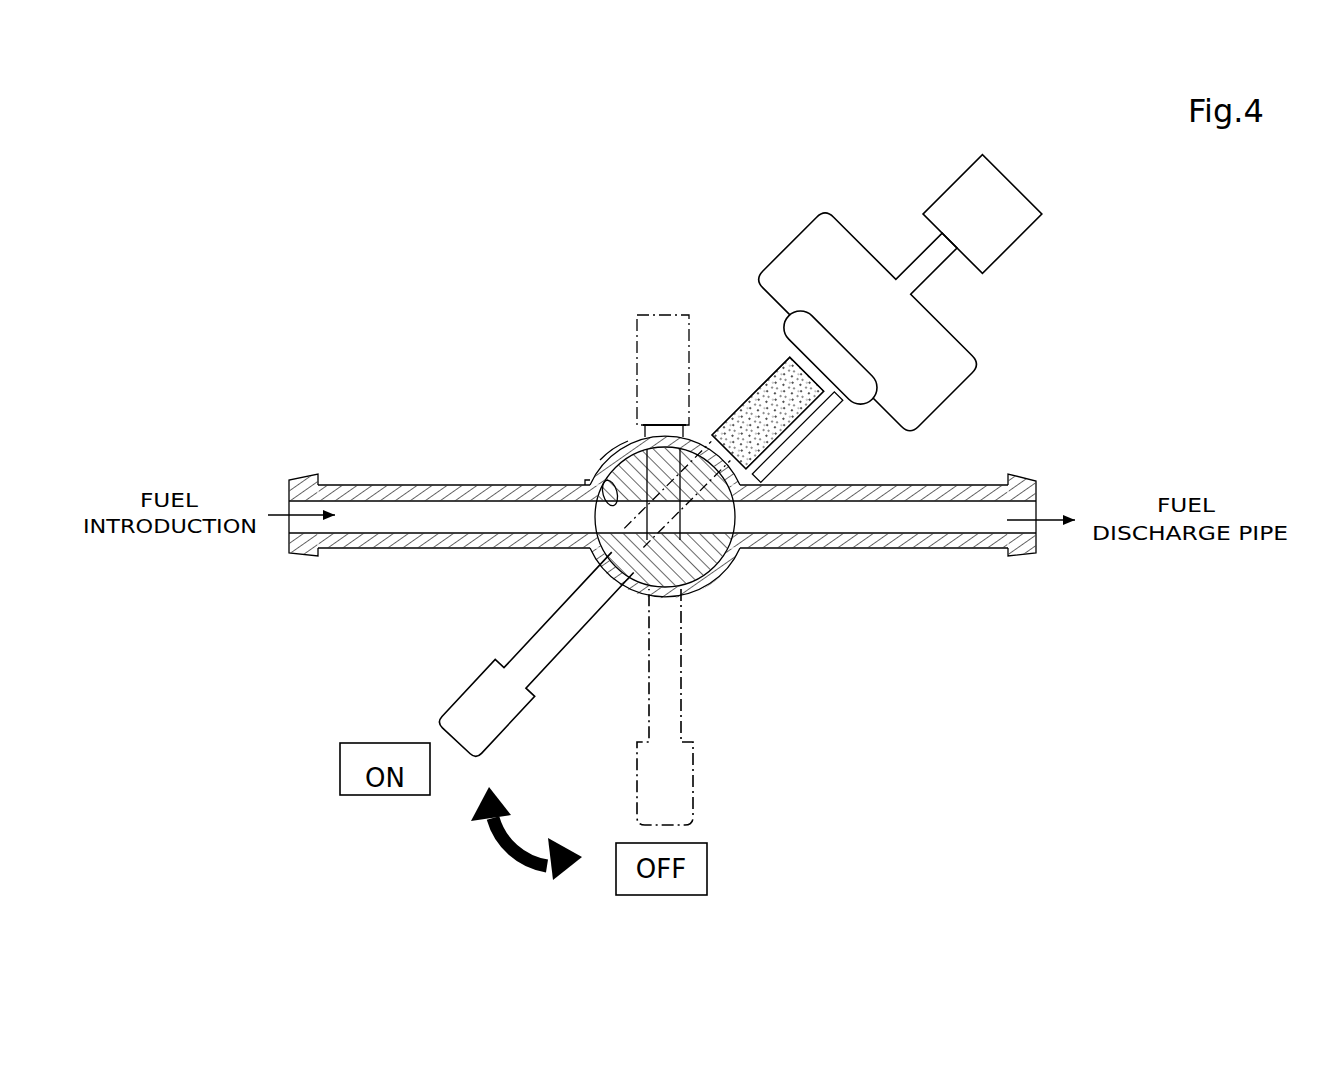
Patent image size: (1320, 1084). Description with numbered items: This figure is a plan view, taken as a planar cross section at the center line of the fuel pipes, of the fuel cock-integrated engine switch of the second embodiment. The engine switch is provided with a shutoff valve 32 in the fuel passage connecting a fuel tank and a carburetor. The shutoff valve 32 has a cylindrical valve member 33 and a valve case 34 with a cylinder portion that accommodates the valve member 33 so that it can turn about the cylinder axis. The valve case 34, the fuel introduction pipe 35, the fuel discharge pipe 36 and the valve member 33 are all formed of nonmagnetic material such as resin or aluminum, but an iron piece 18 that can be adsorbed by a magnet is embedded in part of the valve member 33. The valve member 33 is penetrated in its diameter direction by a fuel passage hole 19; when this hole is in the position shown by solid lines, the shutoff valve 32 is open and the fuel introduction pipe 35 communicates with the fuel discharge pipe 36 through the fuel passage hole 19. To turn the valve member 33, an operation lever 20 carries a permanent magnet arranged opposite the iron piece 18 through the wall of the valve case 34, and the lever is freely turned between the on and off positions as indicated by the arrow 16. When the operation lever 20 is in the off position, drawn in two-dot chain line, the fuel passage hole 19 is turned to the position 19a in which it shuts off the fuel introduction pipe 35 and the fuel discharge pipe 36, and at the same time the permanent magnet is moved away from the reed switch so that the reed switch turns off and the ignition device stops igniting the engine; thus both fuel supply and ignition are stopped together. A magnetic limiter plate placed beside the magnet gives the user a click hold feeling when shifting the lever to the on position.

The arrow 16 is at (515, 870).
The iron piece 18 is at (688, 513).
The fuel passage hole 19 is at (598, 465).
The position of fuel passage hole 19a is at (615, 548).
The operation lever 20 is at (502, 705).
The shutoff valve 32 is at (600, 452).
The valve member 33 is at (625, 595).
The valve case 34 is at (623, 442).
The fuel introduction pipe 35 is at (390, 548).
The fuel discharge pipe 36 is at (937, 548).